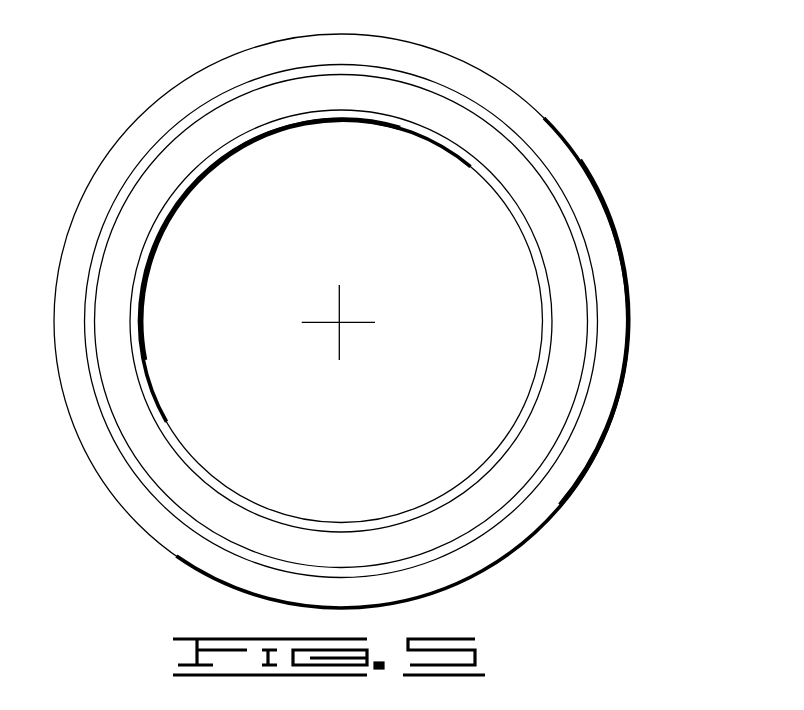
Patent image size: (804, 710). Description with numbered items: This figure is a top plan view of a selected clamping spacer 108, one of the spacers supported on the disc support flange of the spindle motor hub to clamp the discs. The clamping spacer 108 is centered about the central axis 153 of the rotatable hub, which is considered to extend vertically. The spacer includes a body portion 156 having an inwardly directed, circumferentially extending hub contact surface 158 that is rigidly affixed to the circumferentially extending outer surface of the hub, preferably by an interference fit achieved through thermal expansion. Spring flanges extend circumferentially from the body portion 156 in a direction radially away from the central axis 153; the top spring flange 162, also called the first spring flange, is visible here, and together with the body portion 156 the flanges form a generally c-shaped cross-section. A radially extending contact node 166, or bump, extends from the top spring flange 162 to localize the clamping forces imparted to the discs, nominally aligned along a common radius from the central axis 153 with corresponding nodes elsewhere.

The clamping spacer 108 is at (523, 62).
The central axis 153 is at (327, 323).
The body portion 156 is at (515, 205).
The hub contact surface 158 is at (250, 147).
The top spring flange 162 is at (607, 265).
The contact node 166 is at (183, 117).